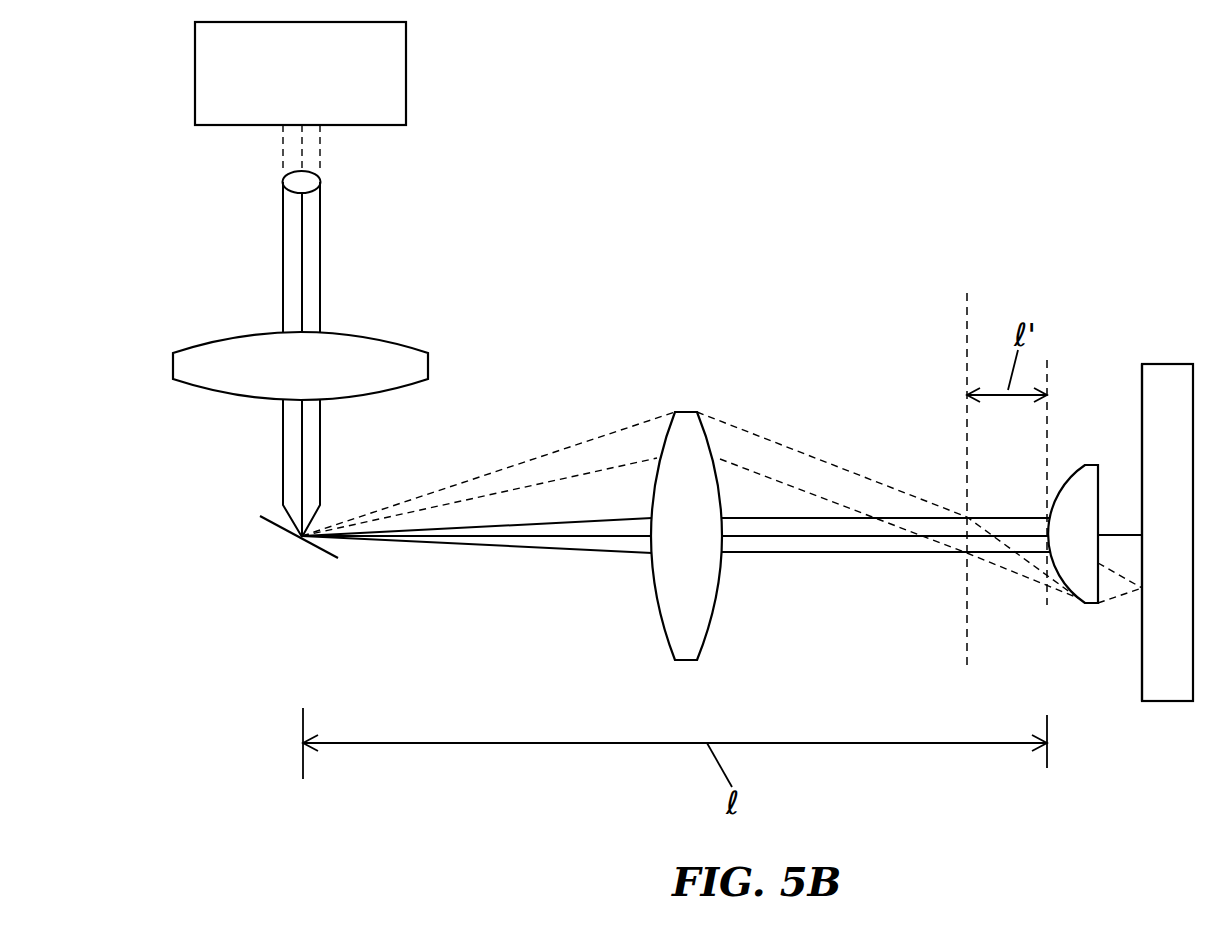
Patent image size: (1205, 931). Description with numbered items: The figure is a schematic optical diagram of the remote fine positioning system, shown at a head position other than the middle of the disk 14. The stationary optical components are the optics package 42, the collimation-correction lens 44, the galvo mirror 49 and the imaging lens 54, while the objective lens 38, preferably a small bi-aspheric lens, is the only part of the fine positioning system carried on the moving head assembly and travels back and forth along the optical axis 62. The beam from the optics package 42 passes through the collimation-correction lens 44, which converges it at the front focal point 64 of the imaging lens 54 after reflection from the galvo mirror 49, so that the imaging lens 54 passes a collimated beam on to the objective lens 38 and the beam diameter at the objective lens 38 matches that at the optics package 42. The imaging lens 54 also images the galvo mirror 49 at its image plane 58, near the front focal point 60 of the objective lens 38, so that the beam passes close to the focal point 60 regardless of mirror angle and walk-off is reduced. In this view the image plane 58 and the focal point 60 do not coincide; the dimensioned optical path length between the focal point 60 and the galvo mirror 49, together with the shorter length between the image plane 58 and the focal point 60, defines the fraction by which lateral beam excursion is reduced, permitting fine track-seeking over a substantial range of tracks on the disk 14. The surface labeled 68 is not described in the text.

The optics package 42 is at (406, 55).
The collimation-correction lens 44 is at (195, 345).
The galvo mirror 49 is at (277, 527).
The front focal point of the imaging lens 64 is at (347, 538).
The imaging lens 54 is at (720, 588).
The optical axis 62 is at (827, 536).
The image plane of the imaging lens 58 is at (965, 345).
The objective lens 38 is at (1093, 465).
The front focal point of the objective lens 60 is at (1048, 533).
The surface 68 is at (1142, 640).
The disk 14 is at (1168, 701).